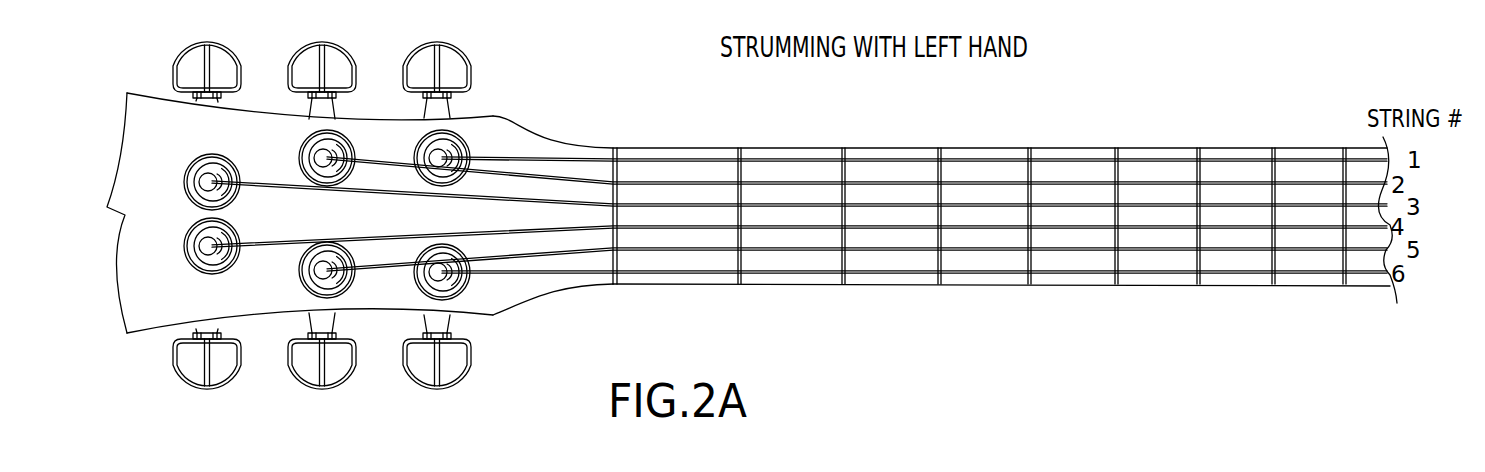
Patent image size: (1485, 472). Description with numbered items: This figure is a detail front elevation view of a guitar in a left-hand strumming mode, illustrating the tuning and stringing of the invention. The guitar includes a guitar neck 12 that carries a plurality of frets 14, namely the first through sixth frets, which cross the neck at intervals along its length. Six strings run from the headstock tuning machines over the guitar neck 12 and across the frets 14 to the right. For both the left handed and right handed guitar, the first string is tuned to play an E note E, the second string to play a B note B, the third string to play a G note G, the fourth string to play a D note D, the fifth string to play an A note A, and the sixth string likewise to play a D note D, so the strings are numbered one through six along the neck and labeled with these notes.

The guitar neck 12 is at (1072, 288).
The frets 14 is at (738, 192).
The E note E is at (912, 162).
The B note B is at (813, 182).
The G note G is at (767, 203).
The D note D is at (692, 273).
The A note A is at (705, 247).